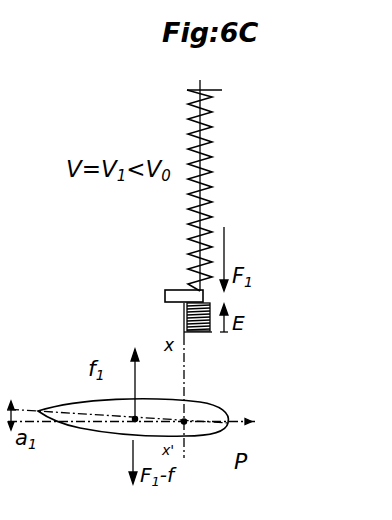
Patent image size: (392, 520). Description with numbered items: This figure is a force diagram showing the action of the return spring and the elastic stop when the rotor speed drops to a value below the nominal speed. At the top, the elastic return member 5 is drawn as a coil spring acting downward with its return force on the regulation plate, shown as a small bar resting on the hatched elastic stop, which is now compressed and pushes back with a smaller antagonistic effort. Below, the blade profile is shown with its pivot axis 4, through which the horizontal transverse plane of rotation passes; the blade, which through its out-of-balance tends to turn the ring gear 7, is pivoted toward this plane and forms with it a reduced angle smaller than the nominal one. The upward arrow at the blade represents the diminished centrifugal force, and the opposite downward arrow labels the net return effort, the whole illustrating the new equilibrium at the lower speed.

The elastic return member 5 is at (211, 160).
The pivot axis 4 is at (186, 423).
The ring gear 7 is at (252, 421).